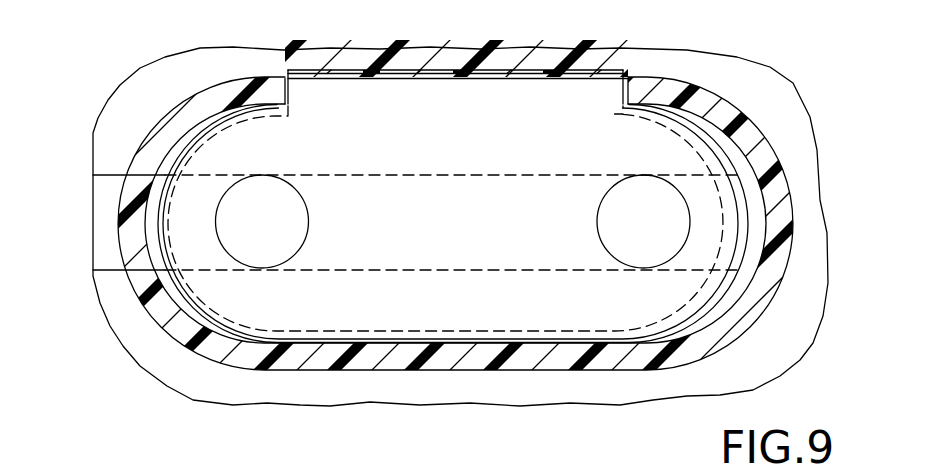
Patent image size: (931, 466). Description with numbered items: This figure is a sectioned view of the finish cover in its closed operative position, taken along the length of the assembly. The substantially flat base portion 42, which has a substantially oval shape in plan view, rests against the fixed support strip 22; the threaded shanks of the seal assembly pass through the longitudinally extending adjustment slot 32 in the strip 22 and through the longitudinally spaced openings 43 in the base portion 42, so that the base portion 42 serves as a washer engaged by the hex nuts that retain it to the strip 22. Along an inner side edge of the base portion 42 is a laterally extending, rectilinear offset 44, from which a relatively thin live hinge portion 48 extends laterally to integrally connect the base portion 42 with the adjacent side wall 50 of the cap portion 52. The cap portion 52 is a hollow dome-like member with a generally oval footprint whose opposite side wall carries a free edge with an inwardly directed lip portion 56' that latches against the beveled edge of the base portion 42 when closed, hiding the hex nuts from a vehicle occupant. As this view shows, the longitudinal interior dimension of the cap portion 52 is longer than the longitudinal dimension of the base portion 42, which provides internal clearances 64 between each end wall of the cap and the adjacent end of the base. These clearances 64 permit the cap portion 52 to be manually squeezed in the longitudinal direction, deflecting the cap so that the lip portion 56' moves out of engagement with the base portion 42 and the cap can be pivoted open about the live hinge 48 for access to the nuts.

The support strip 22 is at (260, 400).
The adjustment slot 32 is at (90, 187).
The base portion 42 is at (470, 309).
The opening 43 is at (302, 204).
The offset 44 is at (337, 90).
The live hinge portion 48 is at (535, 69).
The side wall 50 is at (277, 86).
The cap portion 52 is at (724, 84).
The lip portion 56' is at (445, 223).
The internal clearances 64 is at (758, 207).